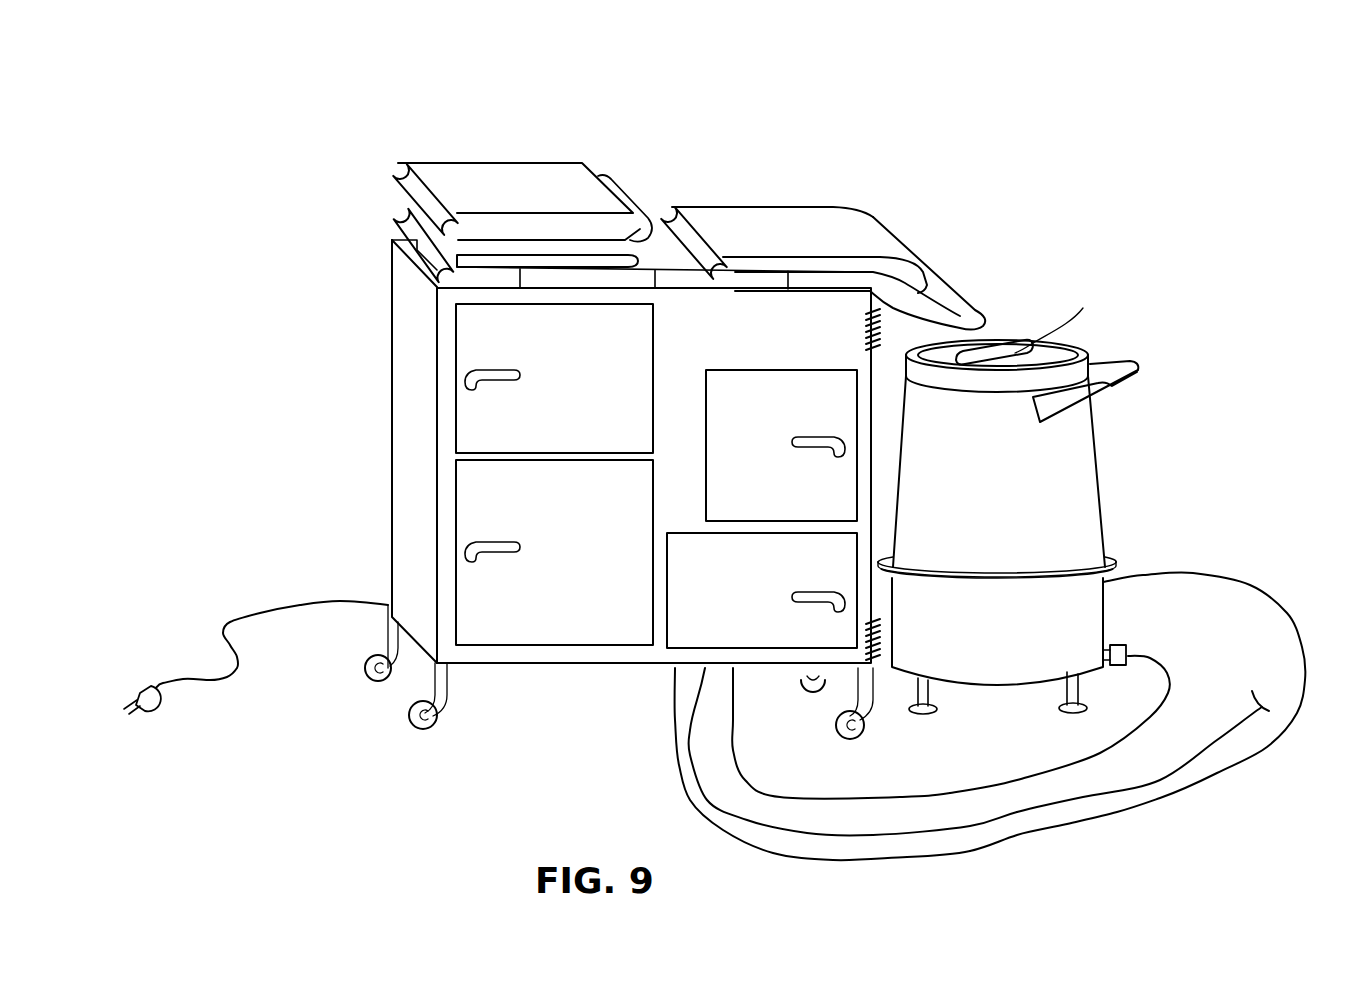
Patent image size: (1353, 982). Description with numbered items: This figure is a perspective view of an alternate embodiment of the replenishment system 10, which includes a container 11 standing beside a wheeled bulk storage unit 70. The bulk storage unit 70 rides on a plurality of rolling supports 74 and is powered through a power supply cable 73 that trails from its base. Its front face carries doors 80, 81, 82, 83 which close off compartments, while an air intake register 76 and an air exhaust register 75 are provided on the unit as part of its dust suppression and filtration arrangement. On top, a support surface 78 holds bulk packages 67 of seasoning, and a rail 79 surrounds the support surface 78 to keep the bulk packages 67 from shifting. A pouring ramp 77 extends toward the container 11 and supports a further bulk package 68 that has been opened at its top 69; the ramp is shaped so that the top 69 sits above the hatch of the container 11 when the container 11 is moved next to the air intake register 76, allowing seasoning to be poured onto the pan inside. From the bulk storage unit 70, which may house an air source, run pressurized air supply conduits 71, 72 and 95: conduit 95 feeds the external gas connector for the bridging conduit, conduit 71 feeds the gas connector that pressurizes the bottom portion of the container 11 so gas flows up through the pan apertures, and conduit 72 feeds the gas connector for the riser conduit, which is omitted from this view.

The replenishment system 10 is at (1147, 152).
The container 11 is at (1083, 493).
The bulk packages 67 is at (518, 162).
The bulk package 68 is at (786, 207).
The top 69 is at (907, 248).
The bulk storage unit 70 is at (392, 307).
The air supply conduit 71 is at (887, 797).
The air supply conduit 72 is at (672, 730).
The power supply cable 73 is at (254, 606).
The rolling supports 74 is at (373, 648).
The air exhaust register 75 is at (856, 663).
The air intake register 76 is at (848, 337).
The pouring ramp 77 is at (977, 313).
The support surface 78 is at (661, 209).
The rail 79 is at (688, 282).
The compartment door 80 is at (762, 491).
The door 81 is at (727, 631).
The door 82 is at (589, 591).
The door 83 is at (582, 421).
The air supply conduit 95 is at (833, 837).